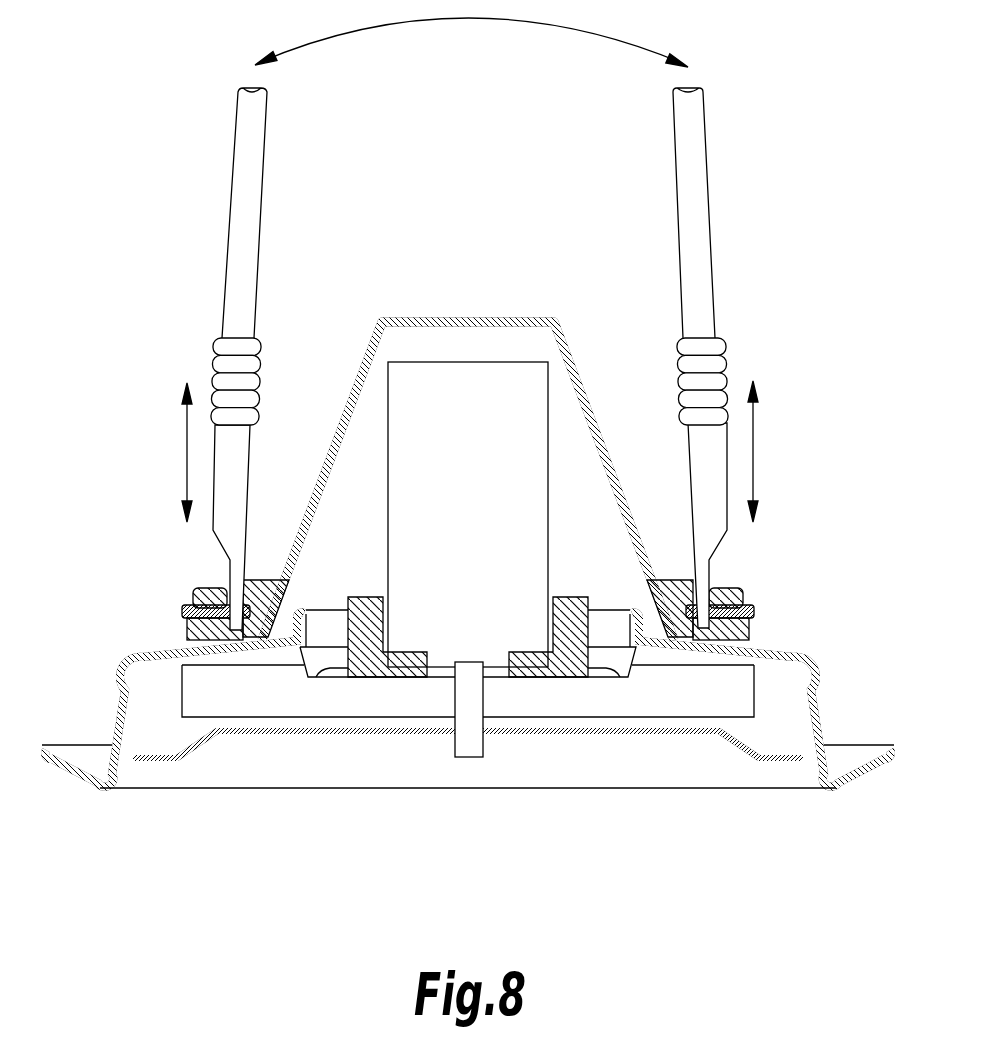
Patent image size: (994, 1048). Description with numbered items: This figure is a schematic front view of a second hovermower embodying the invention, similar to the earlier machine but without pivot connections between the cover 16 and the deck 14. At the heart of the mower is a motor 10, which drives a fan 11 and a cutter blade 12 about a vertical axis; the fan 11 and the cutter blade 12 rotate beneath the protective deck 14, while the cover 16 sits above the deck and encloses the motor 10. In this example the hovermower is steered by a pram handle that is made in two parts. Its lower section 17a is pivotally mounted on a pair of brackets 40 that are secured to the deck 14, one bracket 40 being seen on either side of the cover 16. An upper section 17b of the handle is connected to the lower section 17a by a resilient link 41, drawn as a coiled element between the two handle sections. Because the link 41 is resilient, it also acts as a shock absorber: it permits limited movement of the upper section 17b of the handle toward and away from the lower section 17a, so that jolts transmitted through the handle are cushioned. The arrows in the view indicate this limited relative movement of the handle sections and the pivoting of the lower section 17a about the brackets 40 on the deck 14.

The motor 10 is at (525, 520).
The fan 11 is at (307, 705).
The cutter blade 12 is at (203, 747).
The deck 14 is at (820, 690).
The cover 16 is at (508, 322).
The lower section 17a is at (235, 478).
The upper section 17b is at (245, 175).
The brackets 40 is at (210, 598).
The resilient link 41 is at (220, 358).